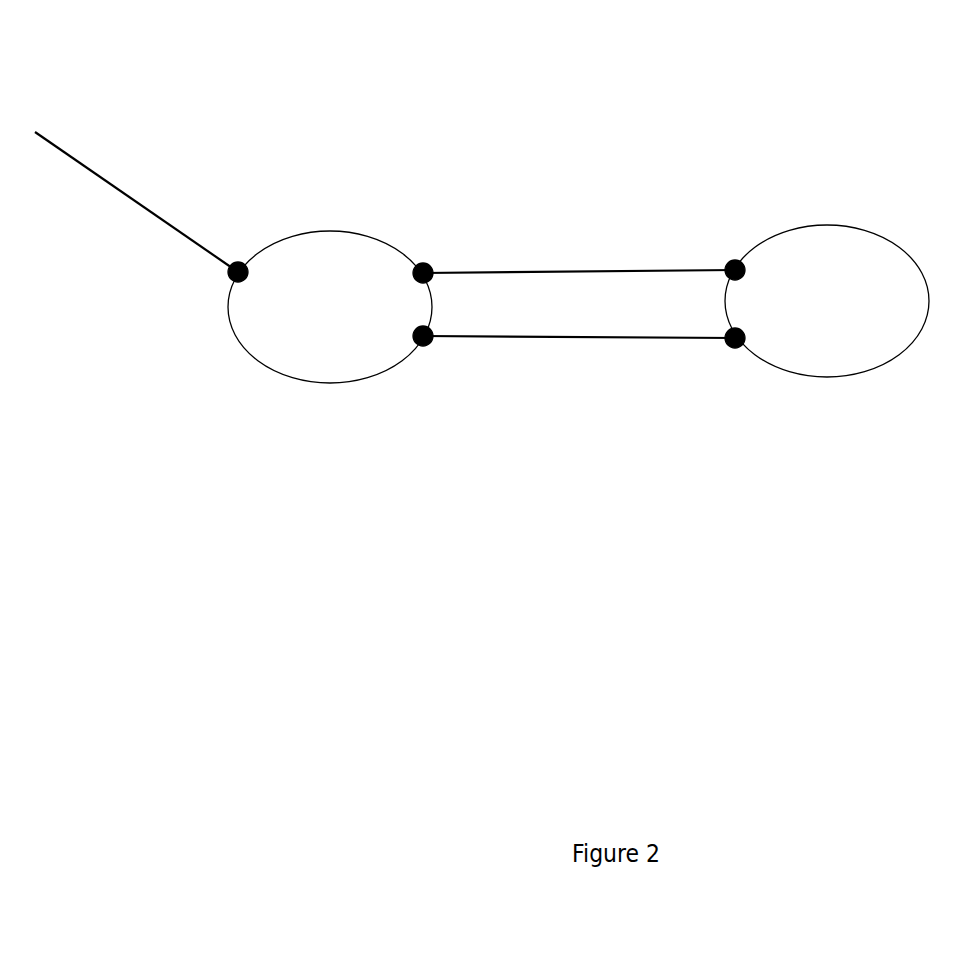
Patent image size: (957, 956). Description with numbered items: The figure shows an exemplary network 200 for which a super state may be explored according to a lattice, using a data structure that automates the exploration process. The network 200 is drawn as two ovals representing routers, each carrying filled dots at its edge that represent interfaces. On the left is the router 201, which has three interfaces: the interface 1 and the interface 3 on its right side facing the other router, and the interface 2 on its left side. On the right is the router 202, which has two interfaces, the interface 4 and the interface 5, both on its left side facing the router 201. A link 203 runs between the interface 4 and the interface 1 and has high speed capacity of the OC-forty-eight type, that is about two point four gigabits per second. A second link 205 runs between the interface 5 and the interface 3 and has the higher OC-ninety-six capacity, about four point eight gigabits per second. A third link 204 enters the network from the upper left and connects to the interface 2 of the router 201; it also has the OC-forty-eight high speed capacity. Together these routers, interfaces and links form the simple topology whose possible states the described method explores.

The exemplary network 200 is at (688, 56).
The router 201 is at (330, 307).
The router 202 is at (827, 301).
The link 203 is at (525, 270).
The link 204 is at (150, 207).
The link 205 is at (527, 342).
The interface 1 is at (426, 258).
The interface 2 is at (224, 278).
The interface 3 is at (426, 348).
The interface 4 is at (732, 258).
The interface 5 is at (732, 350).